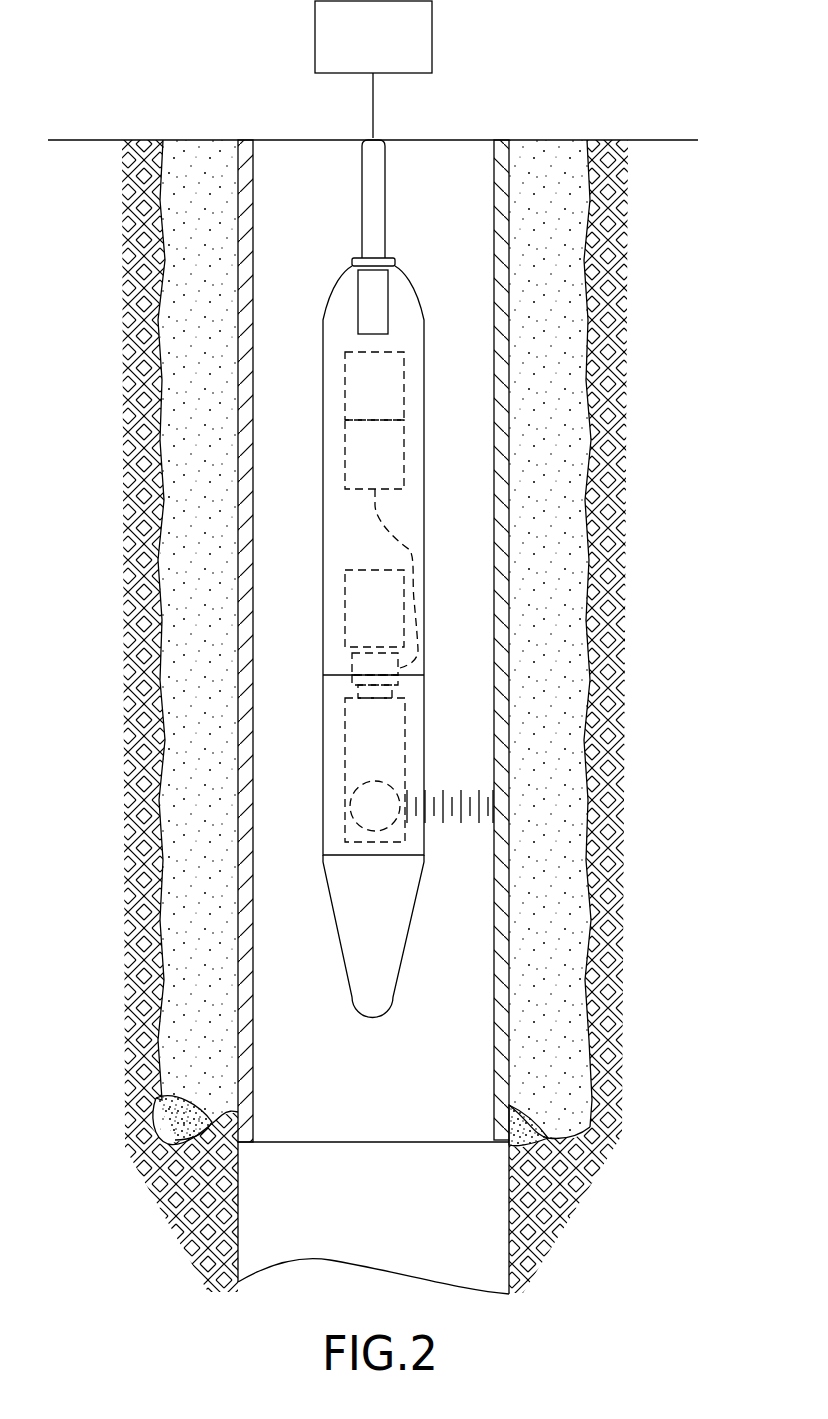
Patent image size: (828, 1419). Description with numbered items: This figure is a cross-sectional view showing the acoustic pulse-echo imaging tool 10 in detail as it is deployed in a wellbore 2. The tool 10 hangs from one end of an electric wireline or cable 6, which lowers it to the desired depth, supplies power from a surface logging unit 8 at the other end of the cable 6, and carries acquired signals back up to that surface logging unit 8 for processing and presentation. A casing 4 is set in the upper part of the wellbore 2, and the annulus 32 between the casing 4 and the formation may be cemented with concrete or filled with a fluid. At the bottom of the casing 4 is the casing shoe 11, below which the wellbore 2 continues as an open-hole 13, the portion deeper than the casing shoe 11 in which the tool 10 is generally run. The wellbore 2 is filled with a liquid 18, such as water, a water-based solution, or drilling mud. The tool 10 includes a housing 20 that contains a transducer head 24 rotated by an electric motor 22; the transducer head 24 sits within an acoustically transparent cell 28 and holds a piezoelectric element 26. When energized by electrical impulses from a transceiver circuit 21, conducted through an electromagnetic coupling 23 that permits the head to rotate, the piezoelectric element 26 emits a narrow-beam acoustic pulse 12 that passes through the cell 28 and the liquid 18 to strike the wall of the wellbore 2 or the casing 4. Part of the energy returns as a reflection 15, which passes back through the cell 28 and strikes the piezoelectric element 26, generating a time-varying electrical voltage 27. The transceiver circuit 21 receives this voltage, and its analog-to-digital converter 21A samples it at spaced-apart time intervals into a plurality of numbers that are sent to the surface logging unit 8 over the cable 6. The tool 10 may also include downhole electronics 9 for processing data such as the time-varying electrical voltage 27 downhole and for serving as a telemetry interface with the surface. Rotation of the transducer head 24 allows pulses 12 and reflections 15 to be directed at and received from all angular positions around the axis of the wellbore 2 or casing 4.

The wellbore 2 is at (203, 612).
The casing 4 is at (243, 725).
The cable 6 is at (386, 211).
The surface logging unit 8 is at (432, 32).
The downhole electronics 9 is at (383, 282).
The acoustic pulse-echo imaging tool 10 is at (374, 628).
The casing shoe 11 is at (212, 1128).
The acoustic pulse 12 is at (455, 818).
The open-hole 13 is at (258, 1225).
The reflection 15 is at (450, 789).
The liquid 18 is at (270, 950).
The housing 20 is at (333, 298).
The transceiver circuit 21 is at (345, 460).
The analog-to-digital converter 21A is at (345, 382).
The electric motor 22 is at (345, 603).
The electromagnetic coupling 23 is at (352, 665).
The transducer head 24 is at (345, 765).
The piezoelectric element 26 is at (352, 820).
The time-varying electrical voltage 27 is at (412, 553).
The acoustically transparent cell 28 is at (426, 700).
The annulus 32 is at (215, 262).